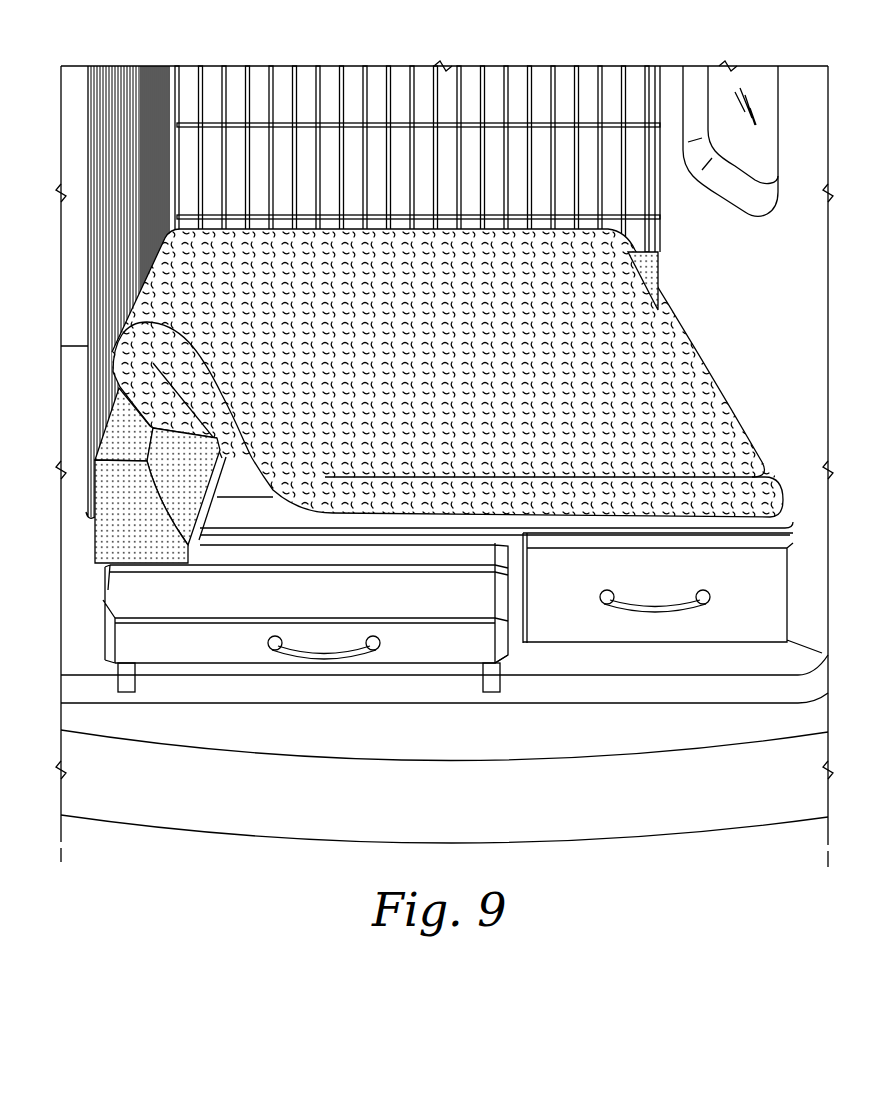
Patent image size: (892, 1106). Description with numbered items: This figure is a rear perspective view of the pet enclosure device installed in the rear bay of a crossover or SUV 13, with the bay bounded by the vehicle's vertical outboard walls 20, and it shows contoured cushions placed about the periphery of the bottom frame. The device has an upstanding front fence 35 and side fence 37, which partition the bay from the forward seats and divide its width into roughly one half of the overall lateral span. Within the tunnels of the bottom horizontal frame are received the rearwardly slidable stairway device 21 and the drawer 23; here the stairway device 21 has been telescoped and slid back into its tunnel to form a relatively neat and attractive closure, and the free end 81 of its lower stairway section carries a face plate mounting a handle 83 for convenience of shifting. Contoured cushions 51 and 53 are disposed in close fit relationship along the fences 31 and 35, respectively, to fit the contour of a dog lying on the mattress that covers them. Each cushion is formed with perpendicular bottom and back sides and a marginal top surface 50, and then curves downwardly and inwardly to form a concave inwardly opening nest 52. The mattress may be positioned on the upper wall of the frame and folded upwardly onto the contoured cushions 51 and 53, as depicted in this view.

The SUV 13 is at (205, 845).
The vertical outboard walls 20 is at (780, 334).
The stairway device 21 is at (305, 641).
The drawer 23 is at (686, 655).
The side fence 31 is at (78, 262).
The front fence 35 is at (658, 191).
The side fence 37 is at (208, 95).
The marginal top surface 50 is at (139, 444).
The contoured cushion 51 is at (118, 528).
The concave inwardly opening nest 52 is at (196, 477).
The contoured cushion 53 is at (656, 287).
The free end 81 is at (208, 654).
The handle 83 is at (333, 650).